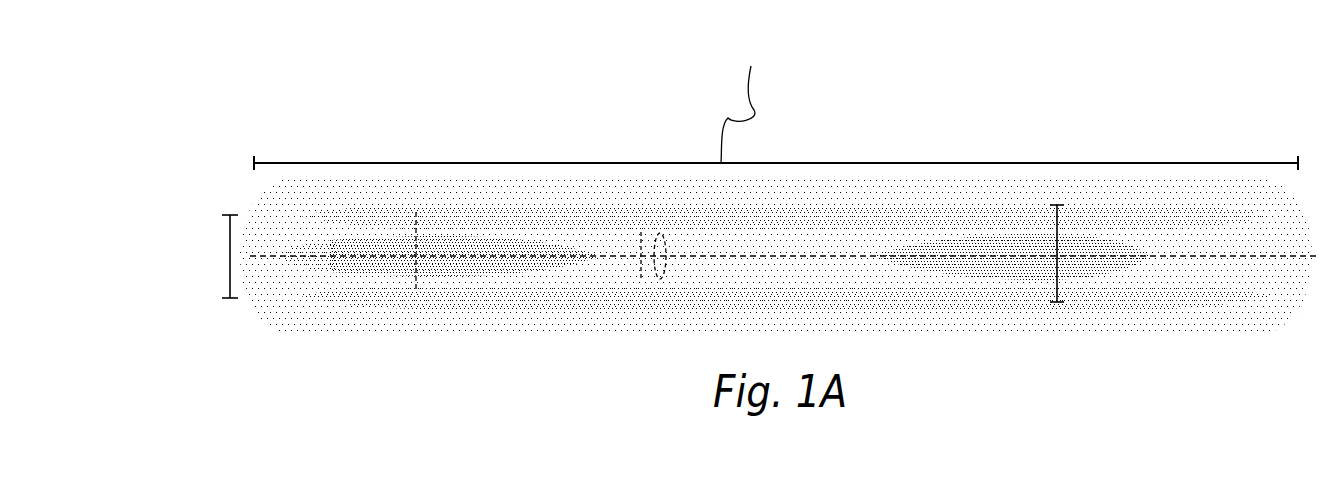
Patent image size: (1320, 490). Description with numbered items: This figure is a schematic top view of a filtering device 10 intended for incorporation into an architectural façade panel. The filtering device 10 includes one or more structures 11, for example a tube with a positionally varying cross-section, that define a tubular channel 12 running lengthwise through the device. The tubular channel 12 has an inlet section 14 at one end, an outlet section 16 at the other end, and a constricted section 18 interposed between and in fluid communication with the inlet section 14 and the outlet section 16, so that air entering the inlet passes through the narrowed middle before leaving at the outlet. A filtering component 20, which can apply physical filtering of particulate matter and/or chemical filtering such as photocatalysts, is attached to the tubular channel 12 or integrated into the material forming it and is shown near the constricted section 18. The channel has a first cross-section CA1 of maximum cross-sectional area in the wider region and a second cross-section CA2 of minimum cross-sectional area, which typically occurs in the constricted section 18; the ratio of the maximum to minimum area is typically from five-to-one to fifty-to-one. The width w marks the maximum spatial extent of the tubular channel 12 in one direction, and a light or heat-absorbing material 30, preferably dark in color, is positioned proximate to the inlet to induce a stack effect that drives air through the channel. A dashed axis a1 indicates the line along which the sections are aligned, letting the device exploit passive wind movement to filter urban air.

The filtering device 10 is at (1029, 99).
The structure 11 is at (951, 312).
The tubular channel 12 is at (501, 262).
The inlet section 14 is at (476, 250).
The outlet section 16 is at (975, 250).
The constricted section 18 is at (652, 212).
The filtering component 20 is at (666, 262).
The light or heat-absorbing material 30 is at (1110, 262).
The first cross-section CA1 is at (410, 242).
The second cross-section CA2 is at (641, 280).
The width w is at (229, 256).
The axis a1 is at (1265, 258).